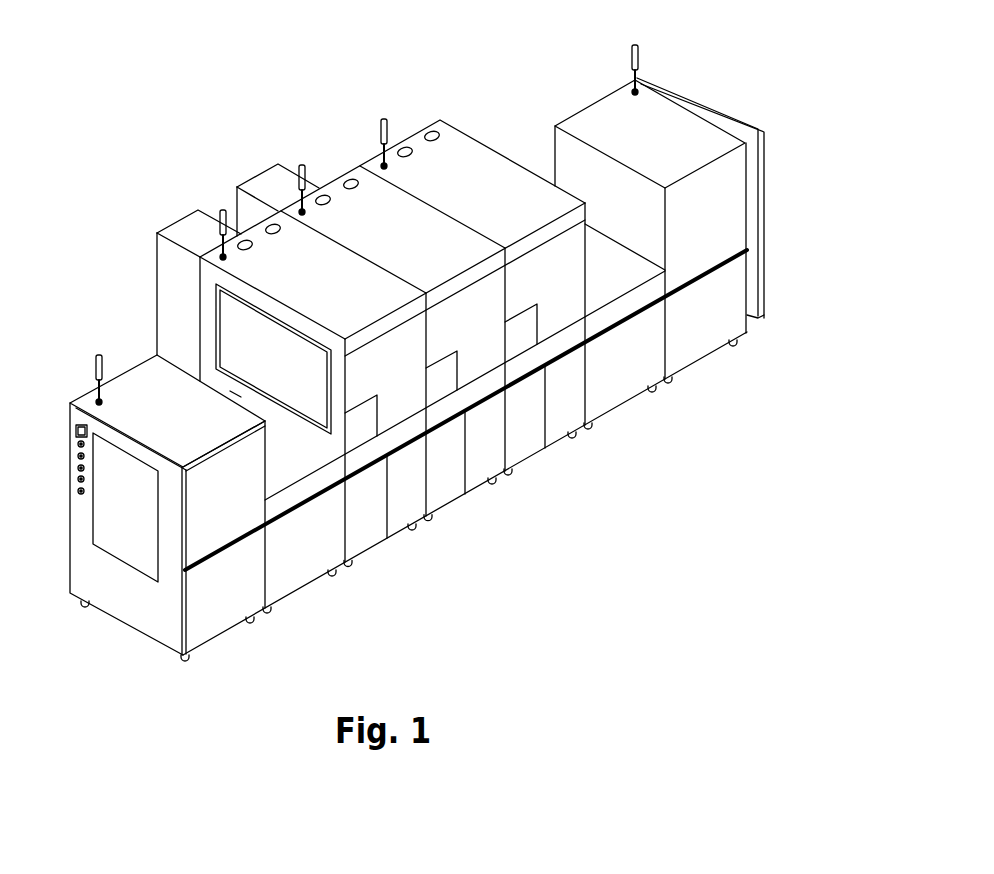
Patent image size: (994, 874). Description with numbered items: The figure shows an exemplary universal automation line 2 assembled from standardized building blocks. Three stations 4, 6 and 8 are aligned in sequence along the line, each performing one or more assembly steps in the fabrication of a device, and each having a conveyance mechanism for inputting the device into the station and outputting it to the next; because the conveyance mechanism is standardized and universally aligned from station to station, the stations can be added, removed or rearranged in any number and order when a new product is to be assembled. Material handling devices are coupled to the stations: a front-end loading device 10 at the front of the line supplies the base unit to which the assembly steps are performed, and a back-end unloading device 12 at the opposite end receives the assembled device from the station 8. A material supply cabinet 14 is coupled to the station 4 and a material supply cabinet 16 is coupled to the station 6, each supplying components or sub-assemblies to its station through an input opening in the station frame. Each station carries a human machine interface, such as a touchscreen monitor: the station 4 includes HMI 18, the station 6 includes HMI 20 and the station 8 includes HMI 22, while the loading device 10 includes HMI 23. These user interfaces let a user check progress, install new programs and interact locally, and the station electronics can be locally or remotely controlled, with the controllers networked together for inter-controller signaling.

The universal automation line 2 is at (578, 29).
The station 4 is at (390, 532).
The station 6 is at (473, 487).
The station 8 is at (553, 440).
The front-end loading device 10 is at (238, 622).
The back-end unloading device 12 is at (713, 353).
The material supply cabinet 14 is at (190, 230).
The material supply cabinet 16 is at (268, 188).
The HMI 18 is at (367, 420).
The HMI 20 is at (448, 377).
The HMI 22 is at (527, 327).
The HMI 23 is at (76, 430).